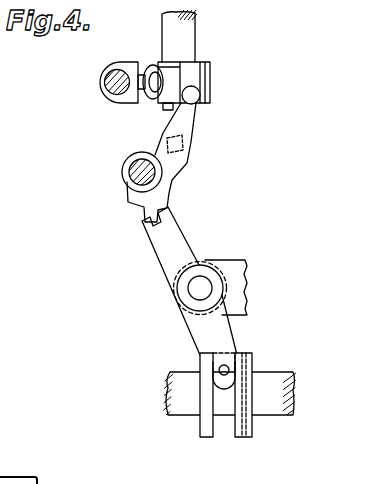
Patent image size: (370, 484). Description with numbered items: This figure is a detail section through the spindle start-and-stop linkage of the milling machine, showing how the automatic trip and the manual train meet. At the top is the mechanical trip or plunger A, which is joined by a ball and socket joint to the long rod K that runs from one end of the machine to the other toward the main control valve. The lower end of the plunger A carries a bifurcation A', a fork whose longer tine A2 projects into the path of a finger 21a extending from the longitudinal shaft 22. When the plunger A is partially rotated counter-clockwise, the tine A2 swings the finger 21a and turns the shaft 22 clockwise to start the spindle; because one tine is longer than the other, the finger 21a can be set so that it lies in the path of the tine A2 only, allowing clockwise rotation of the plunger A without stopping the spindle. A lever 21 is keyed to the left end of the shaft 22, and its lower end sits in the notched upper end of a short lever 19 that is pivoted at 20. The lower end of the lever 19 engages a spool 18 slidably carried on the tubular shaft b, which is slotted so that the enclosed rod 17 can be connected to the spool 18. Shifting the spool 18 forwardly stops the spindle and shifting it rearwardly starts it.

The mechanical trip A is at (195, 36).
The bifurcation A' is at (203, 86).
The arm of bifurcation A2 is at (172, 92).
The long rod K is at (103, 90).
The finger 21a is at (178, 128).
The lever 21 is at (158, 194).
The shaft 22 is at (136, 174).
The short lever 19 is at (157, 247).
The pivot 20 is at (196, 290).
The tubular shaft b is at (245, 382).
The rod 17 is at (290, 390).
The spool 18 is at (252, 432).